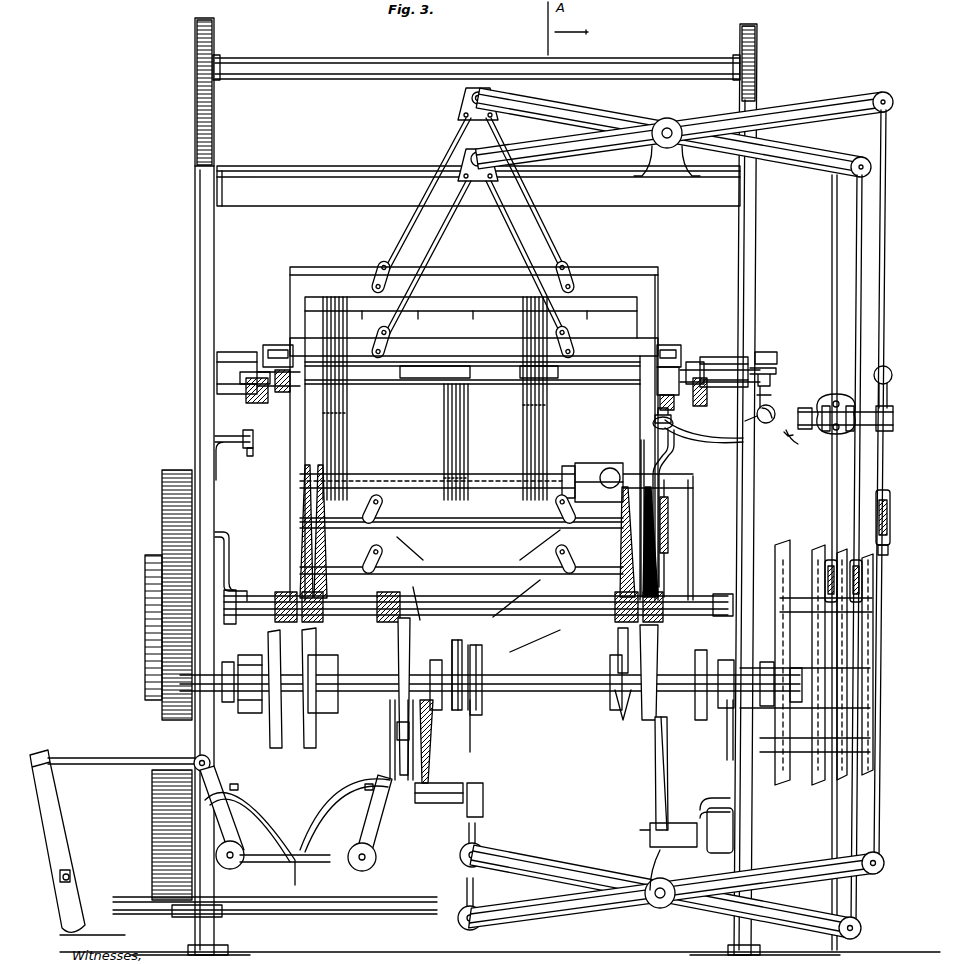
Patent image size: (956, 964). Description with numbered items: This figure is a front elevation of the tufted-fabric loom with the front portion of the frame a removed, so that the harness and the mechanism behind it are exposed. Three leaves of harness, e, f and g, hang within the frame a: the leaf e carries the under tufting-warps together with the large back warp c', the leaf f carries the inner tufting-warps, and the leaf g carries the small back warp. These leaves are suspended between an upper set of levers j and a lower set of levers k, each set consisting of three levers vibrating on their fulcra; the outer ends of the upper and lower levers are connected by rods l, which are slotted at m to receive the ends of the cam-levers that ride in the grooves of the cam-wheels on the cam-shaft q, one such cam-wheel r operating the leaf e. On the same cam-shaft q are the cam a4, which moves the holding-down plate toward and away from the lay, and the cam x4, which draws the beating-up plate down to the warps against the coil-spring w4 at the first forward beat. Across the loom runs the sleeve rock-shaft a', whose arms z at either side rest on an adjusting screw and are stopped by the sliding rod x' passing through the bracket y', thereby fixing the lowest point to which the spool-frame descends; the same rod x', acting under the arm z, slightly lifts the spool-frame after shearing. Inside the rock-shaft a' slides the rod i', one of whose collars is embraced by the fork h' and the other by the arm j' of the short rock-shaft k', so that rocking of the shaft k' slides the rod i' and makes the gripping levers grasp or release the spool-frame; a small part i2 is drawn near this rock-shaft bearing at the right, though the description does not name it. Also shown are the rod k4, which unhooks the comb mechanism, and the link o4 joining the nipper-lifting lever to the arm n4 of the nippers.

The frame a is at (474, 486).
The rock-shaft a' is at (472, 370).
The leaf of the harness e is at (339, 398).
The leaf of the harness g is at (461, 442).
The leaf of the harness f is at (551, 402).
The warp c' is at (258, 377).
The arm of the rock-shaft z is at (472, 356).
The short rock-shaft k' is at (240, 455).
The gear shaft bearing i2 is at (717, 373).
The fork h' is at (770, 381).
The arm j' is at (769, 403).
The levers k is at (760, 414).
The bracket y' is at (698, 425).
The sliding rod x' is at (664, 513).
The rod i' is at (838, 419).
The levers j is at (675, 248).
The rods l is at (860, 530).
The coil-spring w4 is at (478, 557).
The slot m is at (475, 531).
The cam-shaft q is at (491, 696).
The cam x4 is at (623, 674).
The cam a4 is at (650, 770).
The rod k4 is at (449, 667).
The link o4 is at (467, 667).
The arm of the nippers n4 is at (436, 752).
The cam-wheel r is at (806, 662).